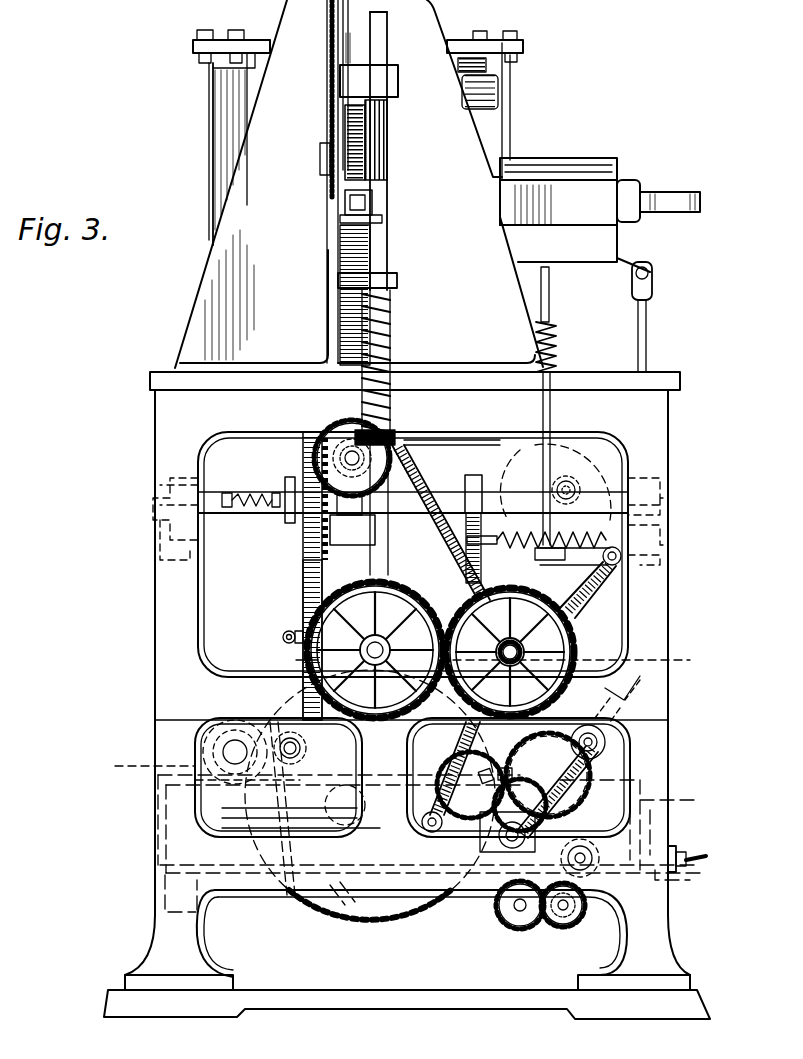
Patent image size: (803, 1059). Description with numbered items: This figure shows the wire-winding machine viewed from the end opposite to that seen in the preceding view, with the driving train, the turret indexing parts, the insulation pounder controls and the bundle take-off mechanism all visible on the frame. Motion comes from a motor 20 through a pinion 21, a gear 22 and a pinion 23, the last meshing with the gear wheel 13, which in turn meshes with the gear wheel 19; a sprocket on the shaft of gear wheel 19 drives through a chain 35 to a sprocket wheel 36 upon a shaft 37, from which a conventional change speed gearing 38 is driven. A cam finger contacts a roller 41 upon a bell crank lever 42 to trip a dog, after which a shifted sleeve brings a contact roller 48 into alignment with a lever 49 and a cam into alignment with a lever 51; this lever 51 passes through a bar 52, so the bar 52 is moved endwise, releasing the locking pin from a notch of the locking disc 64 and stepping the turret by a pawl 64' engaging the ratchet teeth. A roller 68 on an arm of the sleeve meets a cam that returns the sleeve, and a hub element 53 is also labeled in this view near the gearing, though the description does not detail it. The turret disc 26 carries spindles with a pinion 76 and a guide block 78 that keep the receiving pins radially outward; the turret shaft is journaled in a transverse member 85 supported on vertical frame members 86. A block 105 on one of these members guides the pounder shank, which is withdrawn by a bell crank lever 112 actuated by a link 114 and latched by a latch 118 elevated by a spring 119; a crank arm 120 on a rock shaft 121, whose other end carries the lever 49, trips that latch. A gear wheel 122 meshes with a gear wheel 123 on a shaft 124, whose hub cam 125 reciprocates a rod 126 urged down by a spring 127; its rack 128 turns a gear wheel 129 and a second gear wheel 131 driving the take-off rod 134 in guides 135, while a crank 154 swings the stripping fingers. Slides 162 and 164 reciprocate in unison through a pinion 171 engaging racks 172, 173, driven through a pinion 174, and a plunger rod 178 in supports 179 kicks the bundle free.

The transverse member 85 is at (262, 40).
The vertical frame members 86 is at (213, 104).
The rack 128 is at (378, 104).
The second gear wheel 131 is at (366, 133).
The gear wheel 129 is at (388, 160).
The take-off rod 134 is at (373, 204).
The guides 135 is at (383, 220).
The rod 126 is at (388, 258).
The spring 127 is at (392, 322).
The guide block 78 is at (520, 52).
The pinion 76 is at (488, 77).
The turret disc 26 is at (500, 95).
The block 105 is at (582, 158).
The supports 179 is at (640, 182).
The plunger rod 178 is at (678, 186).
The bell crank lever 112 is at (628, 258).
The latch 118 is at (550, 293).
The spring 119 is at (557, 345).
The link 114 is at (647, 330).
The pinion 171 is at (340, 445).
The pinion 174 is at (396, 436).
The slide 164 is at (425, 452).
The rack 172 is at (470, 452).
The slide 162 is at (303, 459).
The pawl 64' is at (455, 517).
The bar 52 is at (525, 445).
The rack 173 is at (300, 512).
The locking disc 64 is at (325, 533).
The crank arm 120 is at (606, 540).
The rock shaft 121 is at (622, 556).
The roller 68 is at (590, 560).
The cam 125 is at (300, 600).
The crank 154 is at (291, 615).
The gear wheel 123 is at (300, 660).
The shaft 124 is at (322, 678).
The lever 49 is at (578, 618).
The hub 53 is at (526, 652).
The contact roller 48 is at (573, 667).
The gear wheel 122 is at (640, 688).
The gear 22 is at (212, 752).
The pinion 23 is at (206, 770).
The pinion 21 is at (306, 750).
The motor 20 is at (317, 808).
The lever 51 is at (455, 758).
The roller 41 is at (492, 768).
The gear wheel 19 is at (548, 775).
The bell crank lever 42 is at (555, 800).
The chain 35 is at (598, 748).
The sprocket wheel 36 is at (600, 840).
The shaft 37 is at (670, 830).
The gear wheel 13 is at (368, 916).
The change speed gearing 38 is at (563, 928).